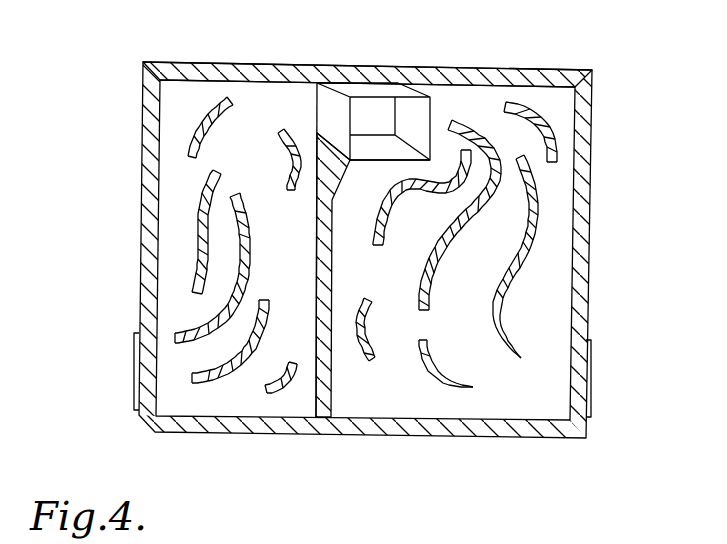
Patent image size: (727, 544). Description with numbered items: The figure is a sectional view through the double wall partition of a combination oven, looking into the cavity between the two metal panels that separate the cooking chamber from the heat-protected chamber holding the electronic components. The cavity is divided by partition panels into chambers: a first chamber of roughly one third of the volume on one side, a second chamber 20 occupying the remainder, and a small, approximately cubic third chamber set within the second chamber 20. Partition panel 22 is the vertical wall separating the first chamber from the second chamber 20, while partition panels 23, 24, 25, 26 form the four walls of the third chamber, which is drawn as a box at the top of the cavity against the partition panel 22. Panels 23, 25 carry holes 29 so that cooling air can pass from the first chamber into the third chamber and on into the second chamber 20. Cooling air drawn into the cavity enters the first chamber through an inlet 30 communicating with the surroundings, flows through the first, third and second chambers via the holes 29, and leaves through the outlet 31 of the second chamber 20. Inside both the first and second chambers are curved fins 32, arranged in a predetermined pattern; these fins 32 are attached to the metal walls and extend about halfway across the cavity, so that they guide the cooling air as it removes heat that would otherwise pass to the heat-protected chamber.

The second chamber 20 is at (555, 228).
The partition panel 22 is at (313, 398).
The partition panel 23 is at (290, 77).
The partition panel 24 is at (358, 86).
The partition panel 25 is at (422, 117).
The partition panel 26 is at (370, 149).
The holes 29 is at (283, 127).
The inlet 30 is at (147, 370).
The outlet 31 is at (583, 384).
The curved fins 32 is at (229, 114).